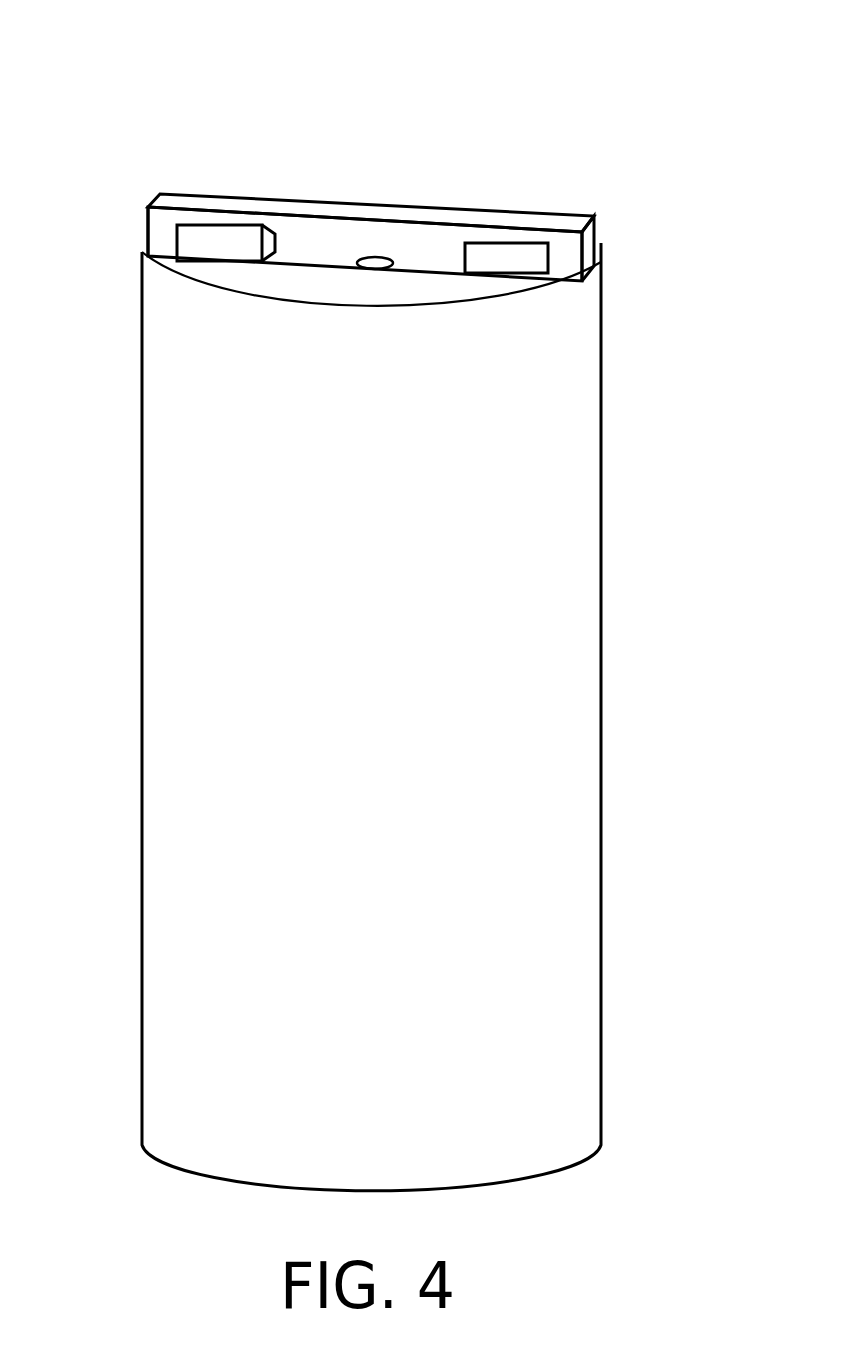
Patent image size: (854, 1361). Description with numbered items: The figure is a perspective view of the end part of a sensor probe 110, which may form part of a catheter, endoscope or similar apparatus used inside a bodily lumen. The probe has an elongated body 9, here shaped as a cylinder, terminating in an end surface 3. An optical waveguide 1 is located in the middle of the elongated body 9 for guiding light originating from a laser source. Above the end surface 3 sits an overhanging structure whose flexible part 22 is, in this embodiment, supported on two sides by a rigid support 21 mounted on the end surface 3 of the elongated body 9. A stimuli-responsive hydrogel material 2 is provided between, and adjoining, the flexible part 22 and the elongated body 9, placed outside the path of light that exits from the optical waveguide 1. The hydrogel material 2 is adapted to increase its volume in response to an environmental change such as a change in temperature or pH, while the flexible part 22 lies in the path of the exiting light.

The sensor probe 110 is at (150, 82).
The elongated body 9 is at (148, 446).
The end surface 3 is at (410, 275).
The optical waveguide 1 is at (371, 269).
The stimuli-responsive hydrogel material 2 is at (222, 252).
The rigid support 21 is at (155, 233).
The flexible part 22 is at (310, 225).